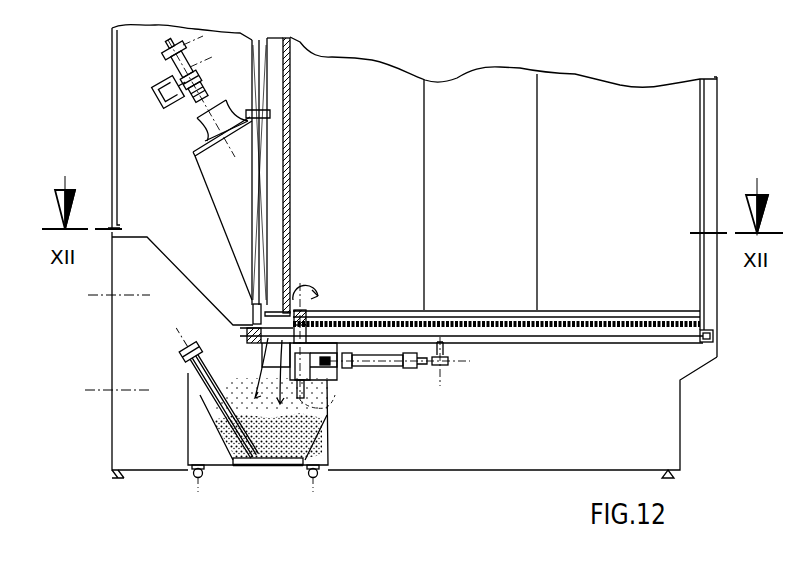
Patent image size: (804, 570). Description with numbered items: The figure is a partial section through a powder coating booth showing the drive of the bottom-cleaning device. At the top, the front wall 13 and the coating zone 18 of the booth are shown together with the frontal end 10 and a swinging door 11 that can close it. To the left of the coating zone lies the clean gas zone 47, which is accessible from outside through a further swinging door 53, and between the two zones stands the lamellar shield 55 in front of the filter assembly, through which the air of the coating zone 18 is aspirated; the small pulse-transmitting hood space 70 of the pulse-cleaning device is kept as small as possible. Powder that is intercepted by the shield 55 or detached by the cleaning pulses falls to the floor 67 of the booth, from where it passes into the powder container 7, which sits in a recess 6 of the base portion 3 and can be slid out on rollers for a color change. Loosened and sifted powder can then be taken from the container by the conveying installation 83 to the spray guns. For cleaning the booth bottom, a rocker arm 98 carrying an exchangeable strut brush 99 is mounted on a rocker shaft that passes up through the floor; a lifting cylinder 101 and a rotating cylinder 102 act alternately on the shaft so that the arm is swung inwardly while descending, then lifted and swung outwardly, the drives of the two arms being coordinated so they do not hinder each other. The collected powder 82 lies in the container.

The base portion 3 is at (597, 448).
The recess 6 is at (157, 459).
The powder container 7 is at (226, 463).
The frontal end 10 is at (461, 561).
The swinging door 11 is at (342, 557).
The front wall 13 is at (707, 158).
The coating zone 18 is at (486, 153).
The clean gas zone 47 is at (161, 153).
The swinging door 53 is at (113, 104).
The shield 55 is at (290, 203).
The floor of the booth 67 is at (700, 325).
The pulse-transmitting hood space 70 is at (244, 201).
The collected material 82 is at (228, 407).
The conveying installation 83 is at (190, 352).
The rocker arm 98 is at (468, 318).
The strut brush 99 is at (573, 323).
The lifting cylinder 101 is at (330, 392).
The rotating cylinder 102 is at (400, 363).